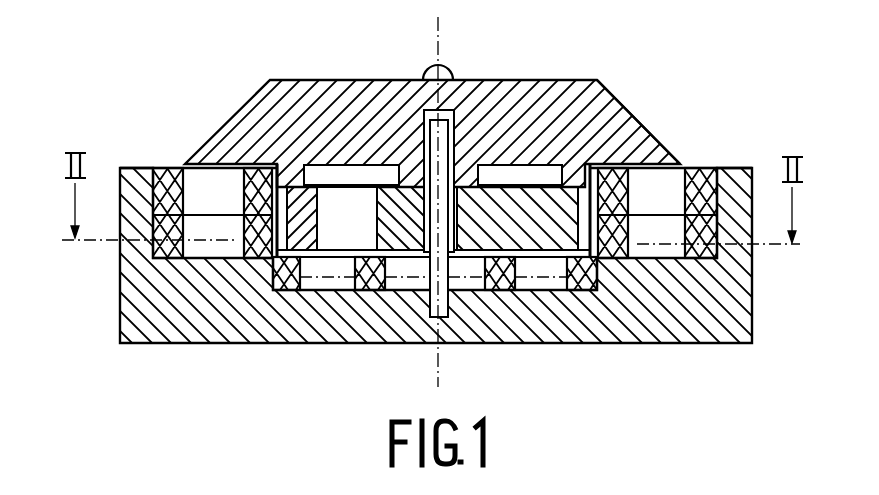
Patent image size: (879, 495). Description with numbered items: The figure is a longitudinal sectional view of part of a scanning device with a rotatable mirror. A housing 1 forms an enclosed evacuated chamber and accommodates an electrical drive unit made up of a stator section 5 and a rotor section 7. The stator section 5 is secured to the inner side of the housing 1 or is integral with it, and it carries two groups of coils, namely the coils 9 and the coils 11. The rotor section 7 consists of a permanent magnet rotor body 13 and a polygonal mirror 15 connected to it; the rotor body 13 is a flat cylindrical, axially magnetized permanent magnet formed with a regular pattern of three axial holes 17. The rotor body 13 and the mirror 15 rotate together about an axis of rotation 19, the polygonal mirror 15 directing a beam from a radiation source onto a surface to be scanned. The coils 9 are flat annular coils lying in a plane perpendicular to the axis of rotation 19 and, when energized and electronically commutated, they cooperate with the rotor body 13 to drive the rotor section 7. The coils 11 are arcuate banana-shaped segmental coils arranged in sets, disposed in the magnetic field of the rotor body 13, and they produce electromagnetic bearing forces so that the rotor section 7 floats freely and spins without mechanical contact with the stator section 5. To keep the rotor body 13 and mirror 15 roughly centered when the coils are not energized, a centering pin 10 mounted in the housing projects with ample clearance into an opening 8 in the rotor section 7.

The housing 1 is at (716, 320).
The stator section 5 is at (687, 149).
The rotor section 7 is at (620, 83).
The opening 8 is at (476, 80).
The coils 9 is at (277, 262).
The centering pin 10 is at (445, 132).
The coils 11 is at (165, 170).
The rotor body 13 is at (300, 190).
The polygonal mirror 15 is at (338, 102).
The axial holes 17 is at (343, 237).
The axis of rotation 19 is at (442, 42).